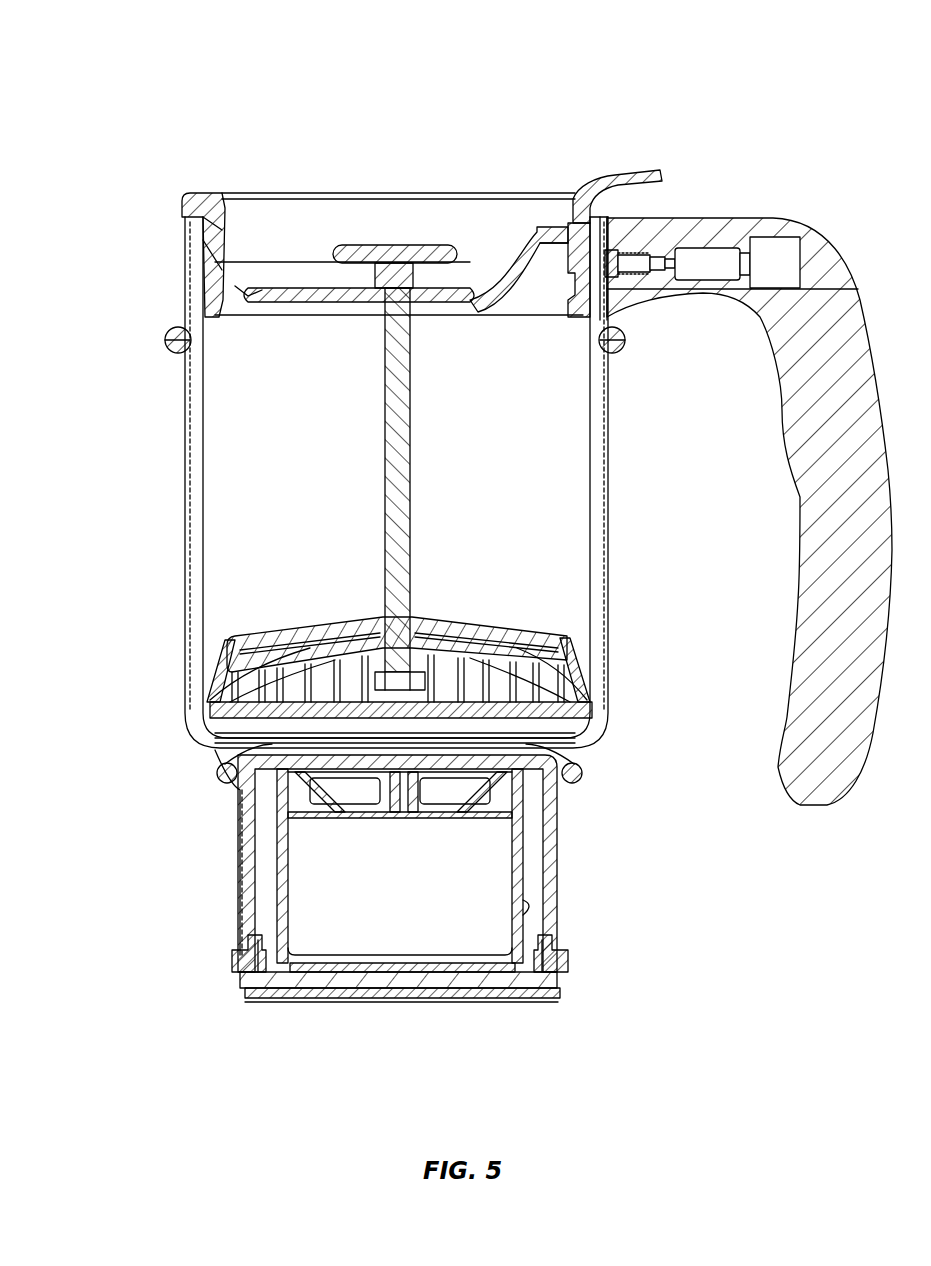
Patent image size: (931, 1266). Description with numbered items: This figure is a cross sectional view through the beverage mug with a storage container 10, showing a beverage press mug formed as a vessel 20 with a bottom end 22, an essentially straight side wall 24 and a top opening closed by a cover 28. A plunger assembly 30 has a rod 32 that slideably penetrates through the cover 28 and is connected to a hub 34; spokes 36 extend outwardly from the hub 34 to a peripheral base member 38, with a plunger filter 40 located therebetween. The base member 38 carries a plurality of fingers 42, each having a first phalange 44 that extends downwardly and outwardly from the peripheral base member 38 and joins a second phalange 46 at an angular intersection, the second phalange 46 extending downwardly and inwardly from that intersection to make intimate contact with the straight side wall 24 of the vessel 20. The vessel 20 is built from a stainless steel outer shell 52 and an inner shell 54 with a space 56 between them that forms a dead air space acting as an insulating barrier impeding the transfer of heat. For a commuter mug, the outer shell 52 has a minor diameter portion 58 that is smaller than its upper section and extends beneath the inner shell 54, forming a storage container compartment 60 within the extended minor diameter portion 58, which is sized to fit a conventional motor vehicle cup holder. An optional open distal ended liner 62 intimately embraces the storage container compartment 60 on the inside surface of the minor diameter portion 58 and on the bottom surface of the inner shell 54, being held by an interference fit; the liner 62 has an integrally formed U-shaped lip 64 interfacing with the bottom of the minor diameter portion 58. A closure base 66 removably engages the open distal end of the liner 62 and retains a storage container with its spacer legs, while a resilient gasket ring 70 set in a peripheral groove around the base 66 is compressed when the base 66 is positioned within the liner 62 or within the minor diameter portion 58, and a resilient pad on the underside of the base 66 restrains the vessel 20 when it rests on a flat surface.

The beverage mug with a storage container 10 is at (590, 148).
The vessel 20 is at (341, 482).
The bottom end 22 is at (585, 752).
The straight side wall 24 is at (210, 505).
The cover 28 is at (348, 183).
The plunger assembly 30 is at (512, 614).
The rod 32 is at (412, 497).
The hub 34 is at (378, 616).
The spokes 36 is at (205, 710).
The peripheral base member 38 is at (580, 634).
The plunger filter 40 is at (600, 706).
The fingers 42 is at (295, 712).
The first phalange 44 is at (230, 665).
The second phalange 46 is at (235, 790).
The outer shell 52 is at (188, 285).
The inner shell 54 is at (746, 511).
The space 56 is at (600, 397).
The minor diameter portion 58 is at (410, 922).
The storage container compartment 60 is at (298, 716).
The liner 62 is at (540, 905).
The U-shaped lip 64 is at (562, 958).
The closure base 66 is at (240, 1003).
The resilient gasket ring 70 is at (236, 958).